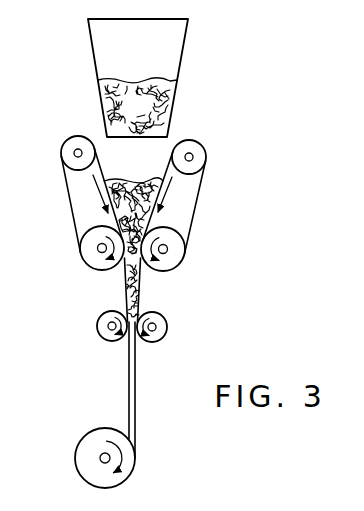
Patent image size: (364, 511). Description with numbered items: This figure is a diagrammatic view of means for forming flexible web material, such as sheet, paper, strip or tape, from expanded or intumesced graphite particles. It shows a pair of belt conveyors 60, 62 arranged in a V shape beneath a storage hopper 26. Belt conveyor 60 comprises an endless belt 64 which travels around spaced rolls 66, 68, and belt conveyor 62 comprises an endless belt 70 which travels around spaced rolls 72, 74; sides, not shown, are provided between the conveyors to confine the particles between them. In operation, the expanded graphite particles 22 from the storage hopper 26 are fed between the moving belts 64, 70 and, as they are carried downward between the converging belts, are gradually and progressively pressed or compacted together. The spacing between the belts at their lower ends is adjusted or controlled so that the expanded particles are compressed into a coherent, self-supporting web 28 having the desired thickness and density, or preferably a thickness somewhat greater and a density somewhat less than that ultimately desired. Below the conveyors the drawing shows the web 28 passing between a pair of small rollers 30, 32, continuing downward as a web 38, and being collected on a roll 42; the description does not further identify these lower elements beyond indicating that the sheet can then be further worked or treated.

The expanded graphite particles 22 is at (137, 166).
The storage hopper 26 is at (183, 57).
The web 28 is at (140, 287).
The roller 30 is at (168, 323).
The roller 32 is at (97, 322).
The web 38 is at (135, 407).
The take-up roll 42 is at (128, 472).
The belt conveyor 60 is at (63, 192).
The belt conveyor 62 is at (195, 197).
The endless belt 64 is at (72, 215).
The roll 66 is at (86, 257).
The roll 68 is at (73, 143).
The endless belt 70 is at (200, 200).
The roll 72 is at (183, 263).
The roll 74 is at (200, 144).